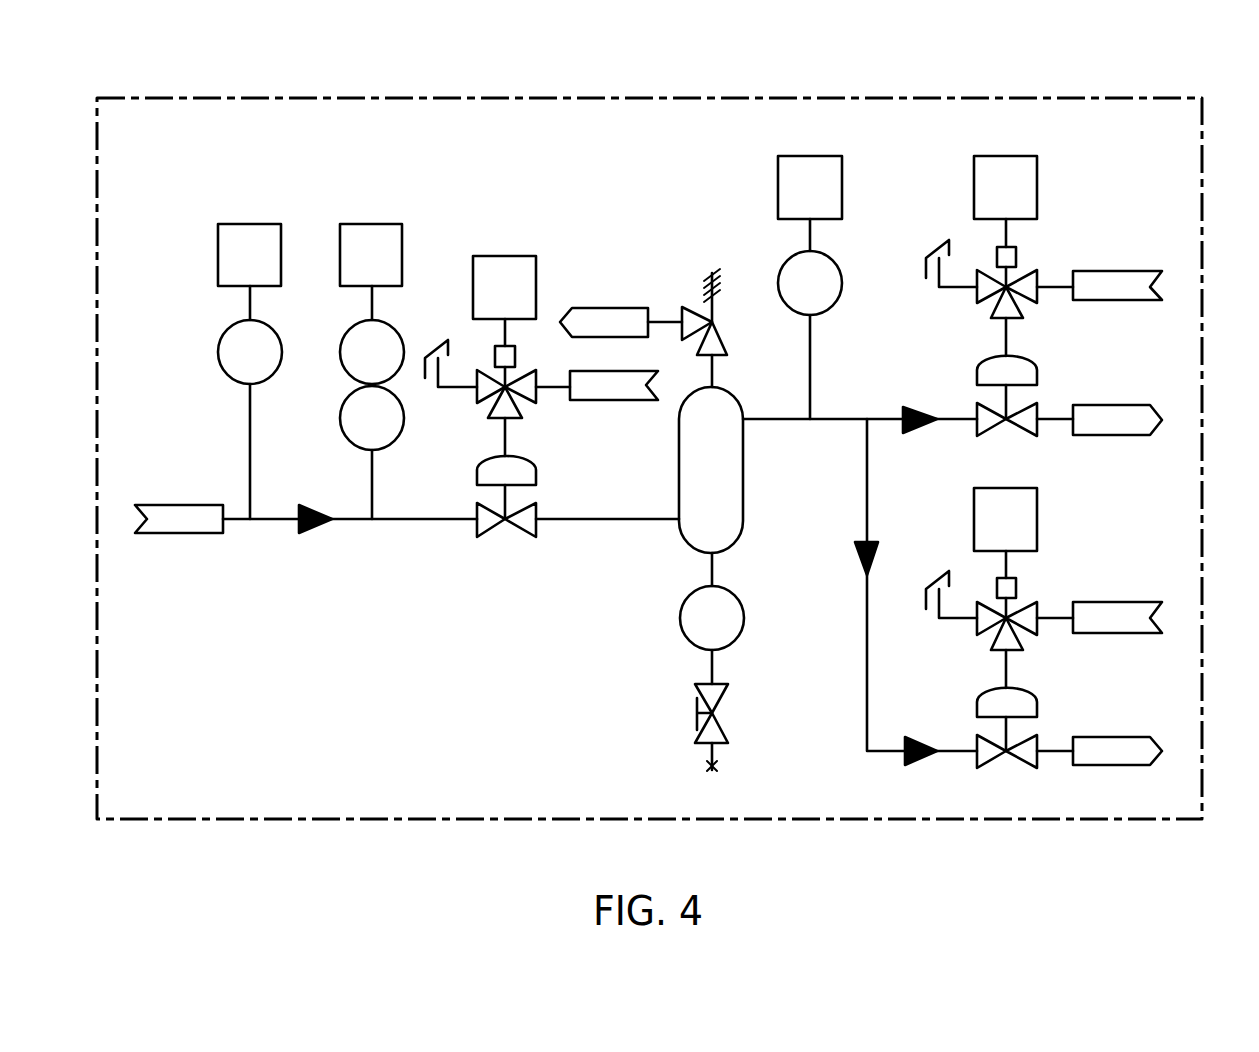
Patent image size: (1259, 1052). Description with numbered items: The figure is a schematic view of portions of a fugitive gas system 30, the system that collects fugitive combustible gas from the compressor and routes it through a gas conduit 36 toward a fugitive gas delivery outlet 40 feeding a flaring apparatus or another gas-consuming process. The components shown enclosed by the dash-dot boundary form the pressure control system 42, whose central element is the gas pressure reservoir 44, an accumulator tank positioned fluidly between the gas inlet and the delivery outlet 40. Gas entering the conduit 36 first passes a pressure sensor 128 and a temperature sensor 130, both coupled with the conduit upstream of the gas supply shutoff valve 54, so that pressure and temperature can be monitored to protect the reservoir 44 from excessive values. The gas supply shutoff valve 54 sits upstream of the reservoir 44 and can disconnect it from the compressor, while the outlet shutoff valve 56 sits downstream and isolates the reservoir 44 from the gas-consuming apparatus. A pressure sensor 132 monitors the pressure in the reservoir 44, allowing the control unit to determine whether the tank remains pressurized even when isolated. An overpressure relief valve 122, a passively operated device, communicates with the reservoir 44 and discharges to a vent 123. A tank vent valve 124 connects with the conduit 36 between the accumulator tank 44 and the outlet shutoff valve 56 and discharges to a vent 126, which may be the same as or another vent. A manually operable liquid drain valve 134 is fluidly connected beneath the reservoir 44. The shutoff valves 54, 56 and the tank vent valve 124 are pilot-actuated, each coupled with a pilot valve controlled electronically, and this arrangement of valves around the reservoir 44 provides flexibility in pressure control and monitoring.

The fugitive gas system 30 is at (1215, 144).
The pressure control system 42 is at (1150, 87).
The gas conduit 36 is at (447, 527).
The pressure sensor 128 is at (250, 464).
The temperature sensor 130 is at (372, 464).
The gas supply shutoff valve 54 is at (477, 464).
The vent 123 is at (620, 308).
The overpressure relief valve 122 is at (727, 333).
The gas pressure reservoir 44 is at (679, 464).
The manually operable liquid drain valve 134 is at (728, 688).
The pressure sensor 132 is at (810, 366).
The outlet shutoff valve 56 is at (977, 362).
The fugitive gas delivery outlet 40 is at (1090, 405).
The tank vent valve 124 is at (977, 691).
The vent 126 is at (1090, 737).